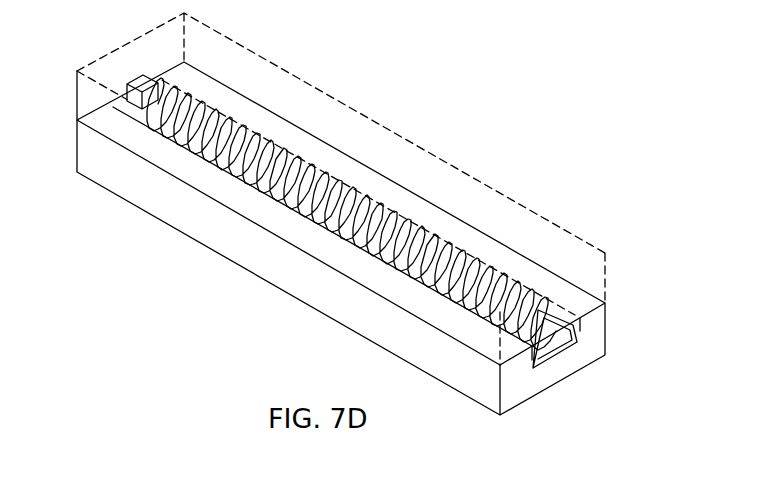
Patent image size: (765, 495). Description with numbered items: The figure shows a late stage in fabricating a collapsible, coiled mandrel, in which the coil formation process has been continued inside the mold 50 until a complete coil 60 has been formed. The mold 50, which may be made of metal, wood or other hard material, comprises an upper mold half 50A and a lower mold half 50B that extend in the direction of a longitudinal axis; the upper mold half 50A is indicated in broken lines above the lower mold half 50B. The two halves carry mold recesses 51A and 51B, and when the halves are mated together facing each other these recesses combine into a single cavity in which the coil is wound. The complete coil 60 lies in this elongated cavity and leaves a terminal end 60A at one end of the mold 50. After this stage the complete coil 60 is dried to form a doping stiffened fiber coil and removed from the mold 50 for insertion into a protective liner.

The mold 50 is at (133, 241).
The upper mold half 50A is at (390, 129).
The lower mold half 50B is at (292, 280).
The mold recess 51A is at (123, 81).
The mold recess 51B is at (548, 363).
The complete coil 60 is at (473, 255).
The terminal end 60A is at (565, 357).